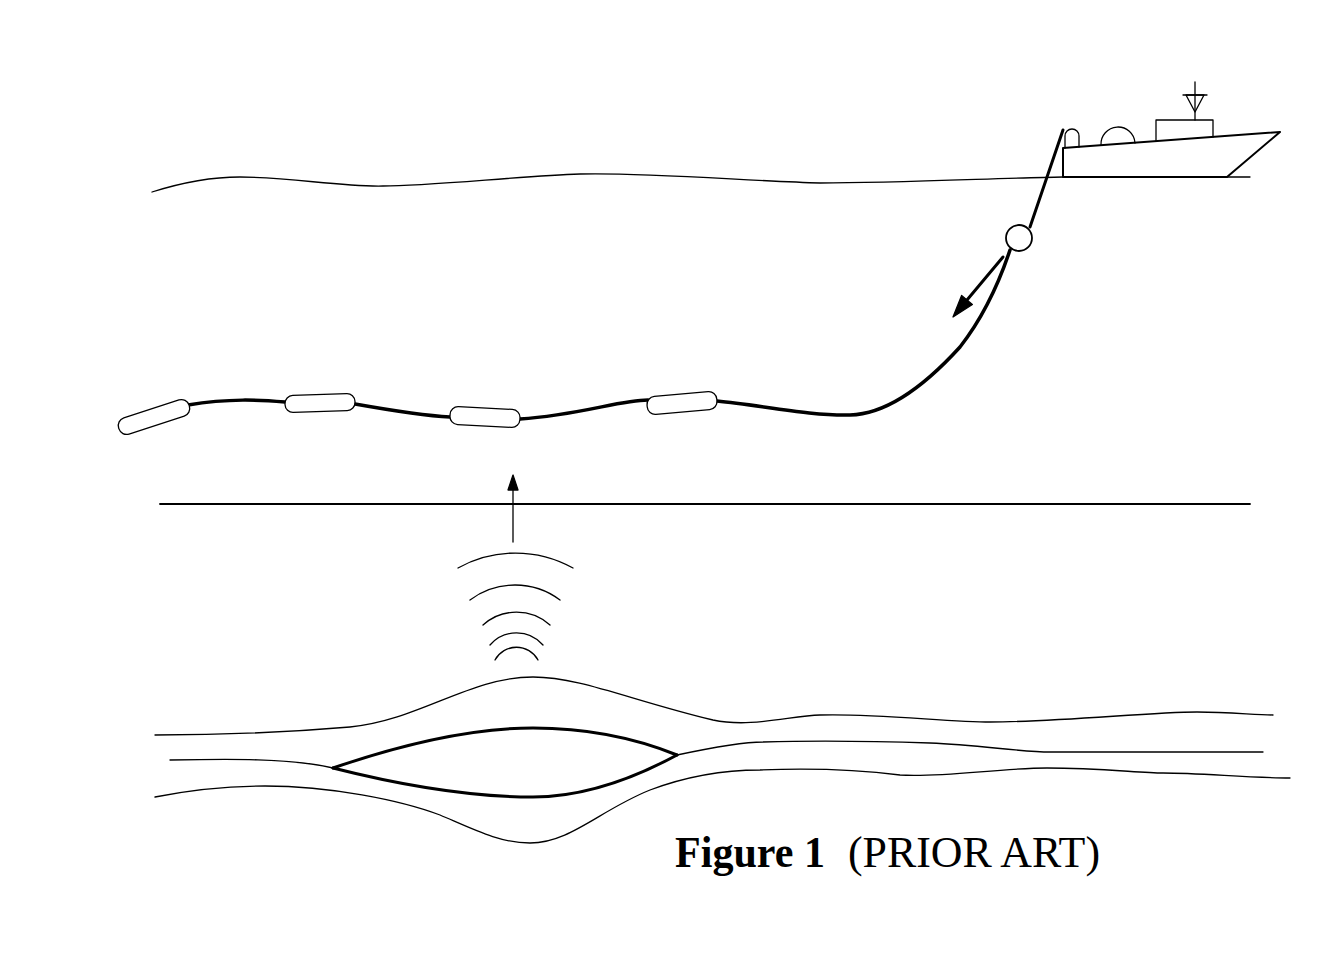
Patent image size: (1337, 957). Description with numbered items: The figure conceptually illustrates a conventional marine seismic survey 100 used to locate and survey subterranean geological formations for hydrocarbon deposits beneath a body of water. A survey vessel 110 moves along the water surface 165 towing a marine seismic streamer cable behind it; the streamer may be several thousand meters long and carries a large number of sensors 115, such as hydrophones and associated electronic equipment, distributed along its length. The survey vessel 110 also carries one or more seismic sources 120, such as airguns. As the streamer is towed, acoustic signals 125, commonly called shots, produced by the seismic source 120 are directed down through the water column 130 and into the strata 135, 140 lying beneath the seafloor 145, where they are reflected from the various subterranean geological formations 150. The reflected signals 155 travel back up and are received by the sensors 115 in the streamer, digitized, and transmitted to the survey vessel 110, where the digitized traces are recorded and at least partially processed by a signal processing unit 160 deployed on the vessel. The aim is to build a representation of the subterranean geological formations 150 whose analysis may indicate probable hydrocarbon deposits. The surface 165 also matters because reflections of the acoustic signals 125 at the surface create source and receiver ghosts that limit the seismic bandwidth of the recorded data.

The marine seismic survey 100 is at (860, 88).
The survey vessel 110 is at (1252, 160).
The signal processing unit 160 is at (1217, 131).
The surface 165 is at (582, 173).
The seismic source 120 is at (1033, 242).
The acoustic signals 125 is at (987, 282).
The sensors 115 is at (153, 426).
The water column 130 is at (163, 371).
The seafloor 145 is at (257, 503).
The reflected signals 155 is at (577, 625).
The strata 140 is at (540, 717).
The subterranean geological formations 150 is at (540, 771).
The strata 135 is at (518, 835).